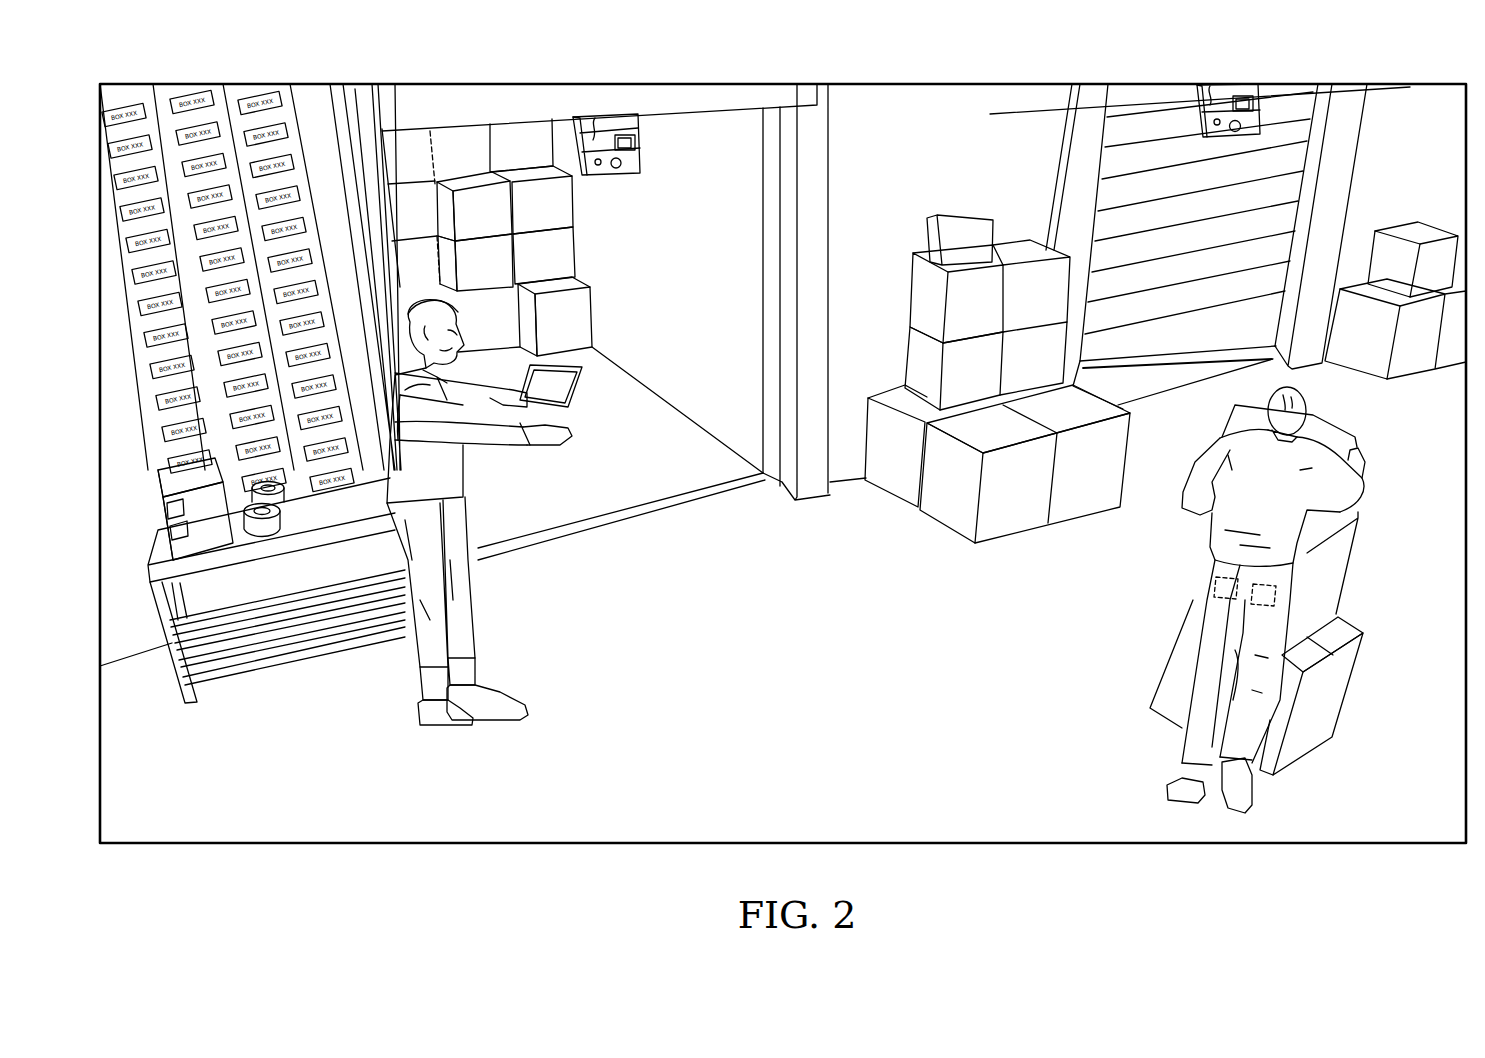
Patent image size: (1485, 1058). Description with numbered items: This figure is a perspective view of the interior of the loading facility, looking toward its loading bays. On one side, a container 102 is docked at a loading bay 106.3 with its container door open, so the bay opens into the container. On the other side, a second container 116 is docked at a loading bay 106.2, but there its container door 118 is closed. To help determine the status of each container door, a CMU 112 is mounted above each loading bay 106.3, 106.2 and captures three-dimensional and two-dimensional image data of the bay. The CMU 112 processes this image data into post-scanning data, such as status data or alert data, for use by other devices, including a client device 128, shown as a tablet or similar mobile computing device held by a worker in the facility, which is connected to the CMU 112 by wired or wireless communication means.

The container 102 is at (643, 492).
The loading bay 106.2 is at (1285, 349).
The loading bay 106.3 is at (790, 408).
The CMU 112 is at (632, 162).
The container 116 is at (1128, 157).
The container door 118 is at (1293, 166).
The client device 128 is at (550, 380).